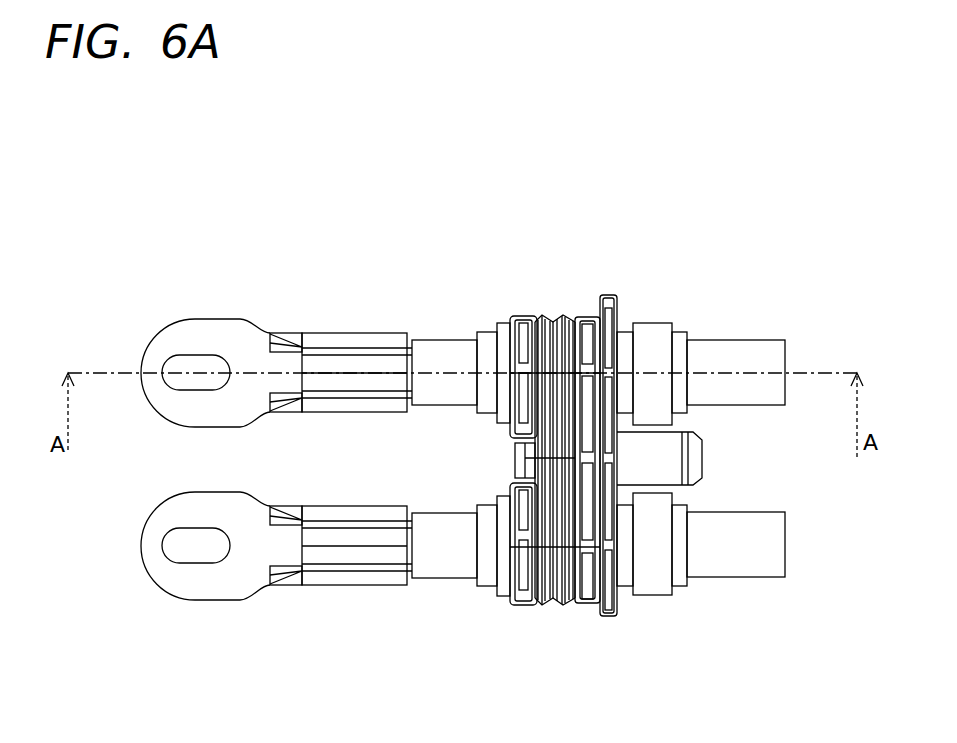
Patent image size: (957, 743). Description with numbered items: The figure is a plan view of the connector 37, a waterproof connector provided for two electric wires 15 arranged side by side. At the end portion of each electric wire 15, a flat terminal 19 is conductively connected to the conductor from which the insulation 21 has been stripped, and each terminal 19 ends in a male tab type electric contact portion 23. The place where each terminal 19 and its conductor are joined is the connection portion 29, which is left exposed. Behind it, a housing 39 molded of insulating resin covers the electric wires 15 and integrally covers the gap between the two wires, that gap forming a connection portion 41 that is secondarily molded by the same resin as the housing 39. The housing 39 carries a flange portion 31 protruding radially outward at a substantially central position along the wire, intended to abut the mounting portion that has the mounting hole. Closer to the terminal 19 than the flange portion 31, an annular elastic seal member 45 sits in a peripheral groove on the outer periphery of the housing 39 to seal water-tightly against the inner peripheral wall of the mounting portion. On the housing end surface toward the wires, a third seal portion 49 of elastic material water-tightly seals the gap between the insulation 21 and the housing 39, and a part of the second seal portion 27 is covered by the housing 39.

The electric wire 15 is at (789, 443).
The terminal 19 is at (259, 437).
The insulation 21 is at (749, 359).
The electric contact portion 23 is at (222, 317).
The second seal portion 27 is at (678, 322).
The connection portion 29 is at (333, 333).
The flange portion 31 is at (610, 293).
The connector 37 is at (623, 403).
The housing 39 is at (520, 304).
The connection portion 41 is at (672, 494).
The elastic seal member 45 is at (542, 315).
The third seal portion 49 is at (480, 330).